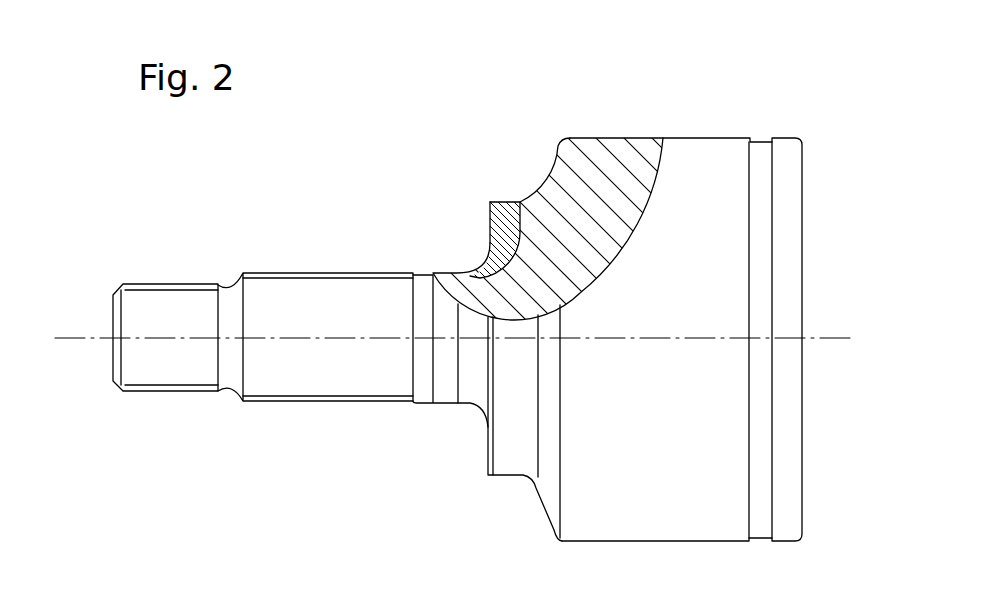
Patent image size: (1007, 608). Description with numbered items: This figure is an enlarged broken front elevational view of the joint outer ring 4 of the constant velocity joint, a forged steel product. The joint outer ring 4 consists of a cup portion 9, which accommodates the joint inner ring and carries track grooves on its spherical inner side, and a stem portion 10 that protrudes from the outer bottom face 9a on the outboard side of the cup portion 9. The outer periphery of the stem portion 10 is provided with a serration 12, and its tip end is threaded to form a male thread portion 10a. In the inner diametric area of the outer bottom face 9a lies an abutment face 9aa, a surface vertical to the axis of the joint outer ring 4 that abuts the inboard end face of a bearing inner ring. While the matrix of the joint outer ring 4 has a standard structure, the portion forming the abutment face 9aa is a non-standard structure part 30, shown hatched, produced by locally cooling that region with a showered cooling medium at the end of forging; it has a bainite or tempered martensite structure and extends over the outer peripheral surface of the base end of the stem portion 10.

The joint outer ring 4 is at (738, 113).
The cup portion 9 is at (692, 168).
The outer bottom face 9a is at (563, 175).
The abutment face 9aa is at (488, 232).
The non-standard structure part 30 is at (511, 210).
The stem portion 10 is at (328, 370).
The male thread portion 10a is at (155, 367).
The serration 12 is at (310, 272).